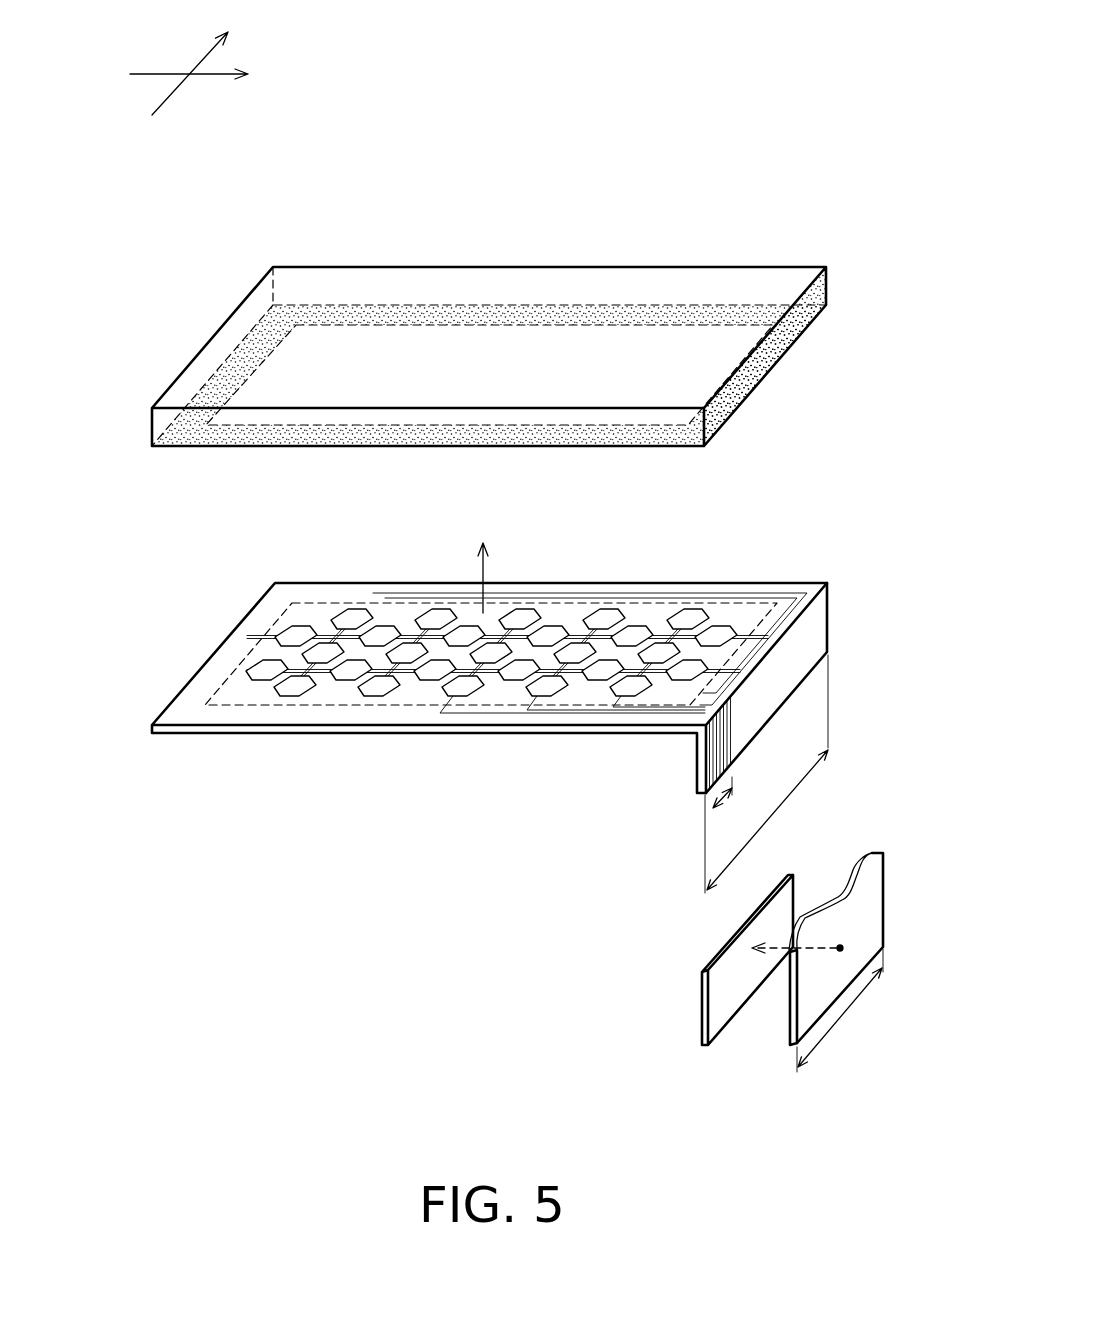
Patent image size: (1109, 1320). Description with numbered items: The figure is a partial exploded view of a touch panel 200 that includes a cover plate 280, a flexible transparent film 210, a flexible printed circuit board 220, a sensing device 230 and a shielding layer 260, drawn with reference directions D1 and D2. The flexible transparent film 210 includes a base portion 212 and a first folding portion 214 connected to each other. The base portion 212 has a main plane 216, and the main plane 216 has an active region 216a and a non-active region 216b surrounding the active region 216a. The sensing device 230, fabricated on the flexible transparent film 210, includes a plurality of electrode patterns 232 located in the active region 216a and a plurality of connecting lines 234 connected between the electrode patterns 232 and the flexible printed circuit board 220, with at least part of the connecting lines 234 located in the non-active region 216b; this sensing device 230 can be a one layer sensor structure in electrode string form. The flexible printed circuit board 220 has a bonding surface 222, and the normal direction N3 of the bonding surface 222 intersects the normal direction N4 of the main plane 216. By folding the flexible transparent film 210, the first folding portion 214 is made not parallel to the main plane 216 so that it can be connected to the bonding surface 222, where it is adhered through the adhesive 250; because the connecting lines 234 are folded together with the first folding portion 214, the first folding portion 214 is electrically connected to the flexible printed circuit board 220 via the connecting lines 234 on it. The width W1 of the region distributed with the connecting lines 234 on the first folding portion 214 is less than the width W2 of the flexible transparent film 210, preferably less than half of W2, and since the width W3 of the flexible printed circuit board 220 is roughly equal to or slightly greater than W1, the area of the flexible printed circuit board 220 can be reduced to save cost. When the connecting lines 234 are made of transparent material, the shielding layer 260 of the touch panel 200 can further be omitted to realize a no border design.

The touch panel 200 is at (866, 1158).
The flexible transparent film 210 is at (668, 806).
The base portion 212 is at (573, 727).
The first folding portion 214 is at (703, 752).
The main plane 216 is at (300, 521).
The active region 216a is at (348, 603).
The non-active region 216b is at (322, 583).
The flexible printed circuit board 220 is at (838, 982).
The bonding surface 222 is at (778, 1010).
The sensing device 230 is at (268, 653).
The electrode patterns 232 is at (452, 690).
The connecting lines 234 is at (480, 717).
The adhesive 250 is at (706, 1015).
The shielding layer 260 is at (399, 316).
The cover plate 280 is at (284, 239).
The width W1 is at (732, 835).
The width W2 is at (767, 772).
The width W3 is at (840, 1010).
The normal direction N3 is at (806, 934).
The normal direction N4 is at (483, 562).
The first direction D1 is at (208, 78).
The second direction D2 is at (199, 60).